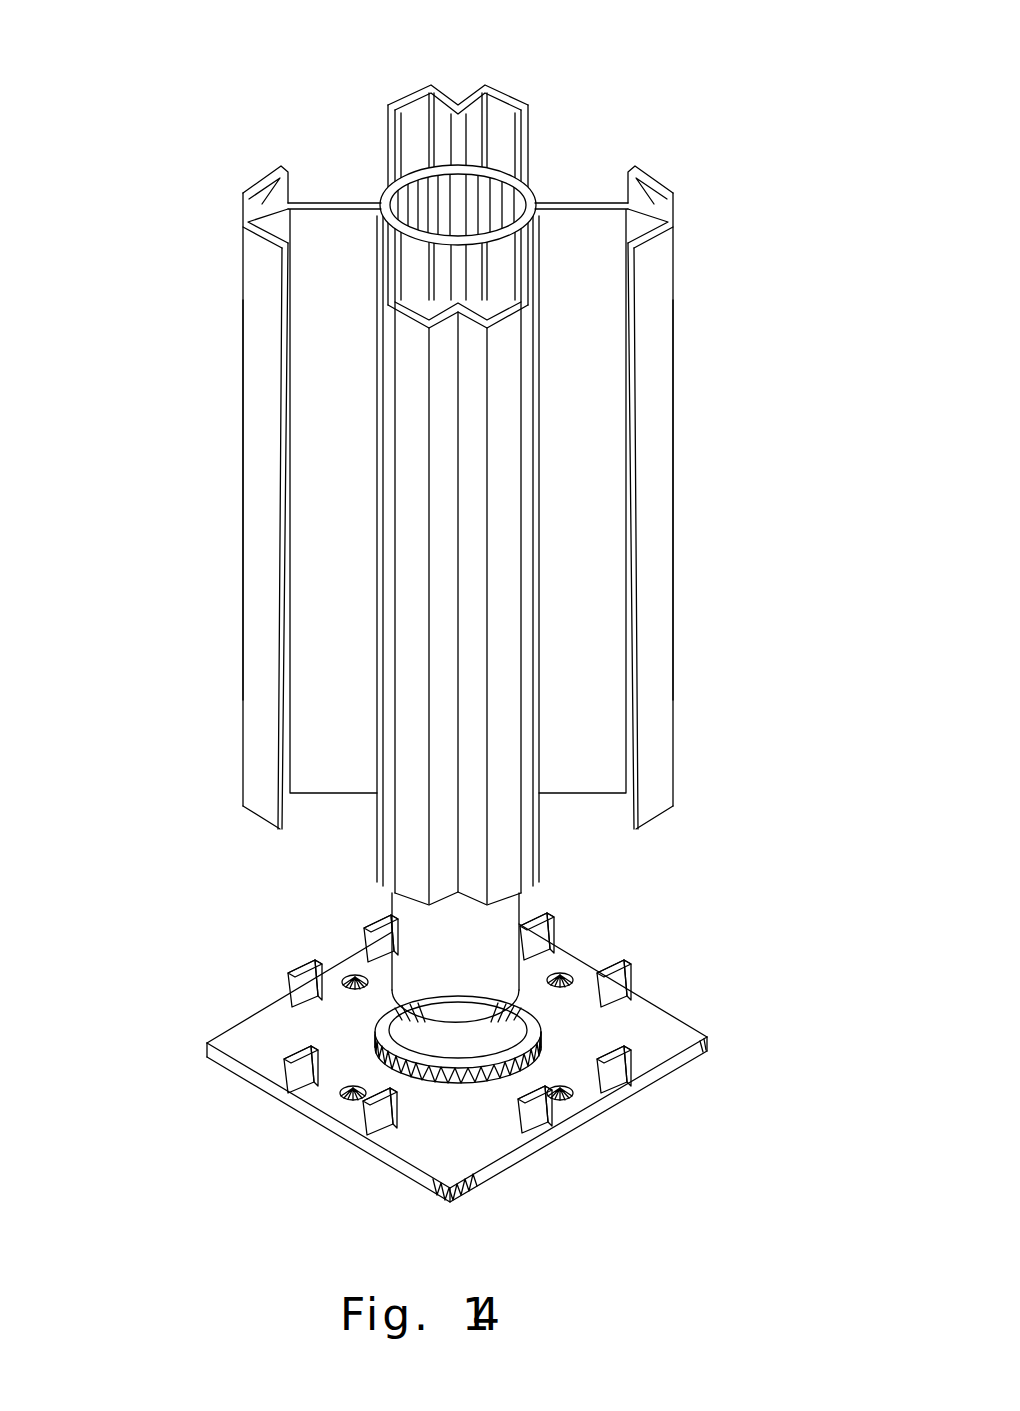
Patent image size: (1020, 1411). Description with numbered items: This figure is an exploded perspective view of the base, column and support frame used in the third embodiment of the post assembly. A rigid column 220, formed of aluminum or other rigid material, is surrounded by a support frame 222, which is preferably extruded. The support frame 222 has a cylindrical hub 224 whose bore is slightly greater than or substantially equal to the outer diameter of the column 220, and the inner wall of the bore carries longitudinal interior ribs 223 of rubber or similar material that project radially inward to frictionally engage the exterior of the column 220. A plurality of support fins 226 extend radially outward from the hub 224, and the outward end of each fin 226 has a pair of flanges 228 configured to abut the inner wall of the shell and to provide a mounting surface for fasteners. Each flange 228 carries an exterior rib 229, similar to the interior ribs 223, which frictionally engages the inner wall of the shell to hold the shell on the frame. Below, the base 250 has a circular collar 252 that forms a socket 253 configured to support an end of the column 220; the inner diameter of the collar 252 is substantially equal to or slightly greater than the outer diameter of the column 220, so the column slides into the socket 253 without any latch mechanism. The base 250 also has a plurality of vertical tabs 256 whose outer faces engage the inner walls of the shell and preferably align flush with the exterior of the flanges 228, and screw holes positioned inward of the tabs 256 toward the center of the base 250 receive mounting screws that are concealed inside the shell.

The column 220 is at (480, 972).
The support frame 222 is at (540, 184).
The interior ribs 223 is at (533, 203).
The cylindrical hub 224 is at (388, 196).
The support fins 226 is at (580, 400).
The flanges 228 is at (266, 585).
The exterior ribs 229 is at (388, 123).
The base 250 is at (660, 1038).
The circular collar 252 is at (380, 1022).
The socket 253 is at (468, 1058).
The vertical tabs 256 is at (303, 987).